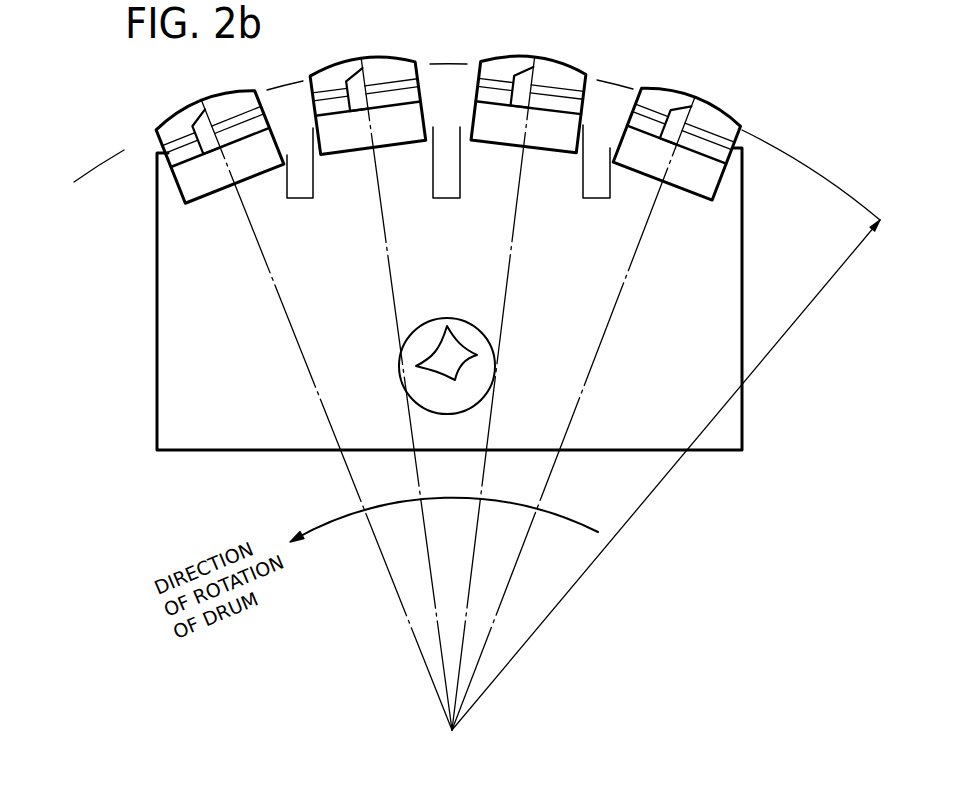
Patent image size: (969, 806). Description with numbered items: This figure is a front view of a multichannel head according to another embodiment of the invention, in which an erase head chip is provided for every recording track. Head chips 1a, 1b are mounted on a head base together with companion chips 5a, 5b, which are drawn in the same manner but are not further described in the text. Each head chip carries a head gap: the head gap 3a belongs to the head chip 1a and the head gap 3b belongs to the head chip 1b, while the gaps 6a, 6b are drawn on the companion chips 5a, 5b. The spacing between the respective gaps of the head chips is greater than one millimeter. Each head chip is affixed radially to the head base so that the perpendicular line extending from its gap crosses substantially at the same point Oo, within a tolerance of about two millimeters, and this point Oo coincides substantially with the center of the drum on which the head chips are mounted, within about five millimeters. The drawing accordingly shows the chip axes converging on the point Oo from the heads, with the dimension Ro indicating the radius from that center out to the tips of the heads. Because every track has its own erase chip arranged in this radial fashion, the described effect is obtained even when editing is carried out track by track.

The head chip 1a is at (553, 142).
The head chip 1b is at (692, 177).
The head gap 3a is at (535, 58).
The head gap 3b is at (697, 97).
The second magnetic head 5a is at (202, 183).
The second magnetic head 5b is at (343, 145).
The head gap of second magnetic head 6a is at (202, 102).
The head gap of second magnetic head 6b is at (363, 60).
The drum radius Ro is at (788, 296).
The common crossing point Oo is at (481, 748).